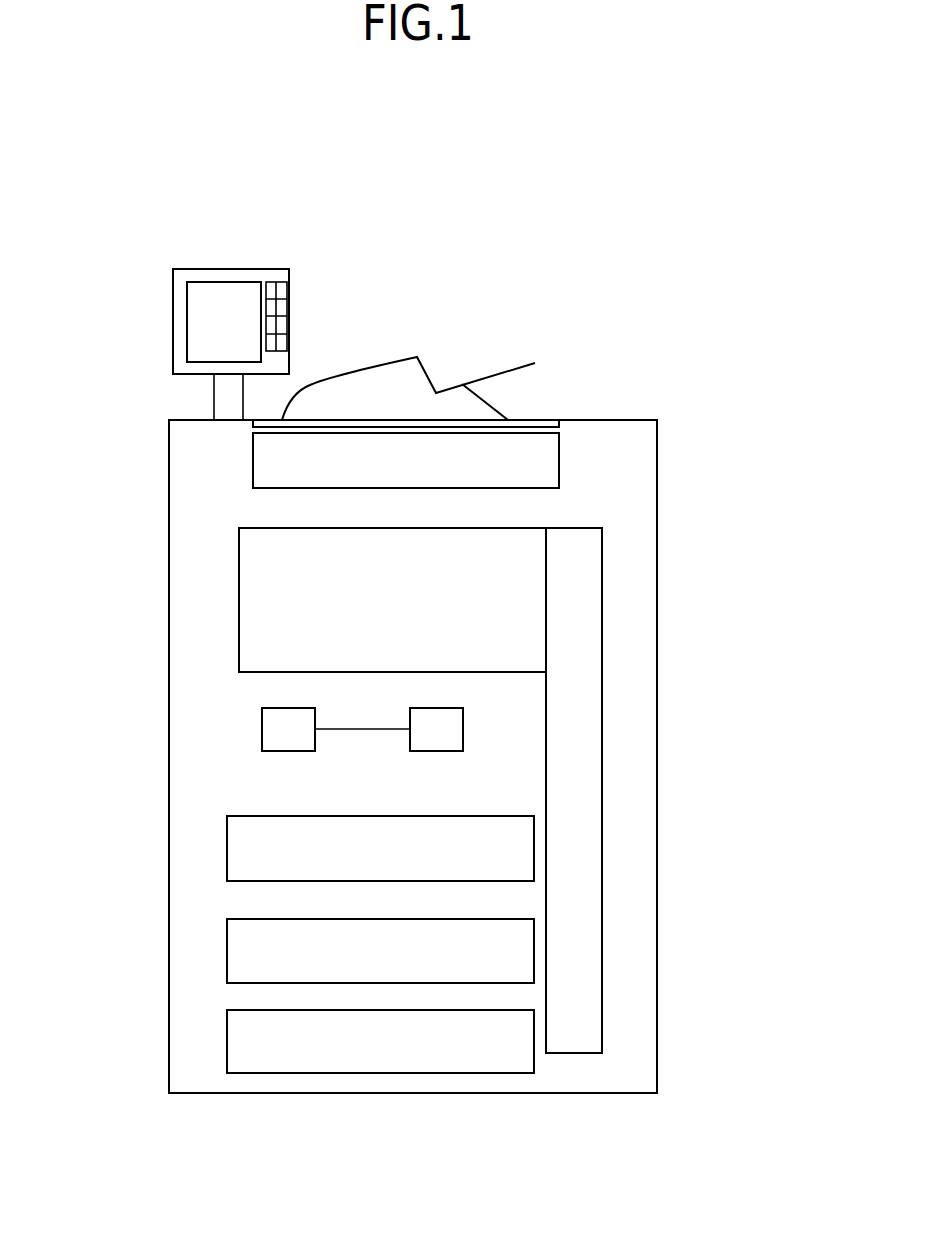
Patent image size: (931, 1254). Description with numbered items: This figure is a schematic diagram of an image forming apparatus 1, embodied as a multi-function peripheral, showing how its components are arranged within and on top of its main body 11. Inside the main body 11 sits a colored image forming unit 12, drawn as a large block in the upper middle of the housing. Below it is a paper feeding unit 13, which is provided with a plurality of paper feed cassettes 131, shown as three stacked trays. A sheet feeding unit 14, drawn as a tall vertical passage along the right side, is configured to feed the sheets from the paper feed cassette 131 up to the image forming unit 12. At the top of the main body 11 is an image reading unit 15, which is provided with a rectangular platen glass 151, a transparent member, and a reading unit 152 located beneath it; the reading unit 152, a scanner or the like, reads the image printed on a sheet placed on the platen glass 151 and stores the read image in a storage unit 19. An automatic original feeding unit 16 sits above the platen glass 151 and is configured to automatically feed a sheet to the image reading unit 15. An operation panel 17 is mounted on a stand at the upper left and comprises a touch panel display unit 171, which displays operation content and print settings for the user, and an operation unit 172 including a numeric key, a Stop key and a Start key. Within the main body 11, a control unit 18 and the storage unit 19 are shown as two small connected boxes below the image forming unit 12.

The image forming apparatus 1 is at (700, 260).
The main body 11 is at (742, 286).
The colored image forming unit 12 is at (263, 585).
The paper feeding unit 13 is at (142, 812).
The paper feed cassette 131 is at (380, 944).
The sheet feeding unit 14 is at (571, 656).
The image reading unit 15 is at (88, 401).
The platen glass 151 is at (240, 418).
The reading unit 152 is at (272, 465).
The automatic original feeding unit 16 is at (422, 352).
The operation panel 17 is at (253, 266).
The touch panel display unit 171 is at (204, 298).
The operation unit 172 is at (283, 297).
The control unit 18 is at (445, 739).
The storage unit 19 is at (275, 730).